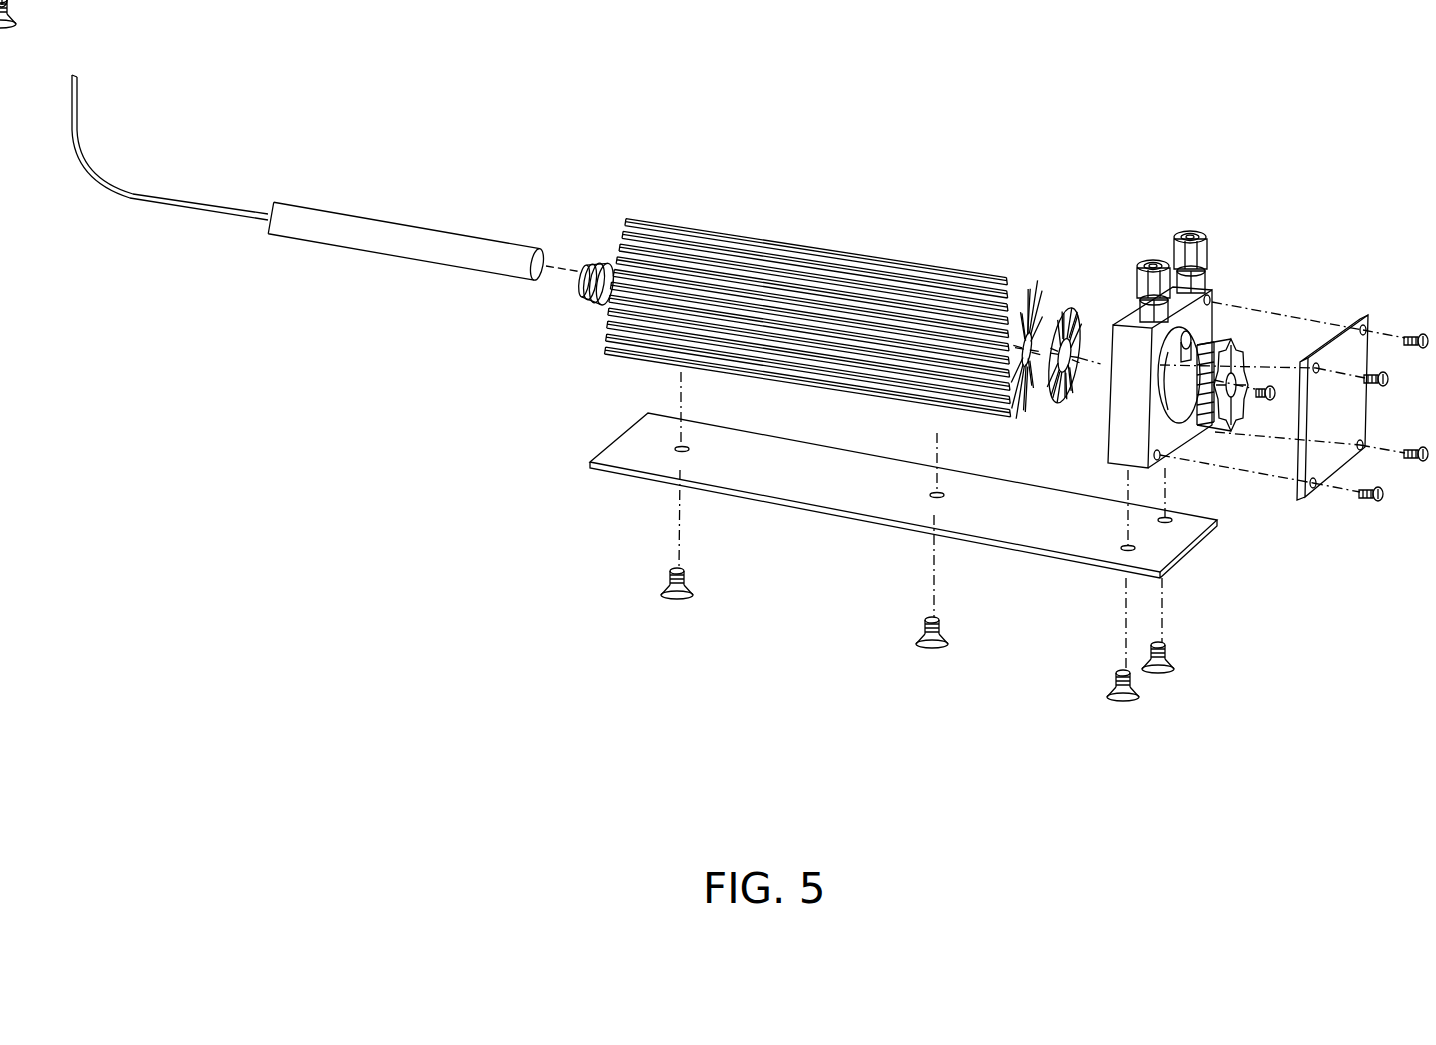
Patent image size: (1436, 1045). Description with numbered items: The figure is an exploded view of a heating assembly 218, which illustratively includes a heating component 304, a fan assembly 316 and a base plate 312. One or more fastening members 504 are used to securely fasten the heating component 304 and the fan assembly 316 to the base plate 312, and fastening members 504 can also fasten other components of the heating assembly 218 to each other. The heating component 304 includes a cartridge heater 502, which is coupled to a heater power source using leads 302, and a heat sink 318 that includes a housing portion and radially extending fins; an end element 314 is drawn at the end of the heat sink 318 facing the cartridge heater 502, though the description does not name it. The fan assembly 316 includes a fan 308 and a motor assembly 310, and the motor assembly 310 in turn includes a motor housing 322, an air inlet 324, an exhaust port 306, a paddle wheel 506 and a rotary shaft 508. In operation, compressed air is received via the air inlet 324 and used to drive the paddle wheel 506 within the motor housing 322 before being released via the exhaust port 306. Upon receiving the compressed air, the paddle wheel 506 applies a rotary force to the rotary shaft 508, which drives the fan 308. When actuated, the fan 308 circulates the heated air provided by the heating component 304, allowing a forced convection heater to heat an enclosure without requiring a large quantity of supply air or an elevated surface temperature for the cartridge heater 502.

The heating assembly 218 is at (316, 642).
The leads 302 is at (132, 190).
The cartridge heater 502 is at (415, 248).
The heating component 304 is at (582, 228).
The end cap 314 is at (588, 298).
The heat sink 318 is at (847, 242).
The fan 308 is at (1070, 293).
The fan assembly 316 is at (1135, 349).
The air inlet 324 is at (1137, 292).
The exhaust port 306 is at (1205, 258).
The rotary shaft 508 is at (1172, 352).
The paddle wheel 506 is at (1207, 432).
The motor assembly 310 is at (1300, 297).
The motor housing 322 is at (1342, 446).
The base plate 312 is at (858, 490).
The fastening members 504 is at (1118, 708).